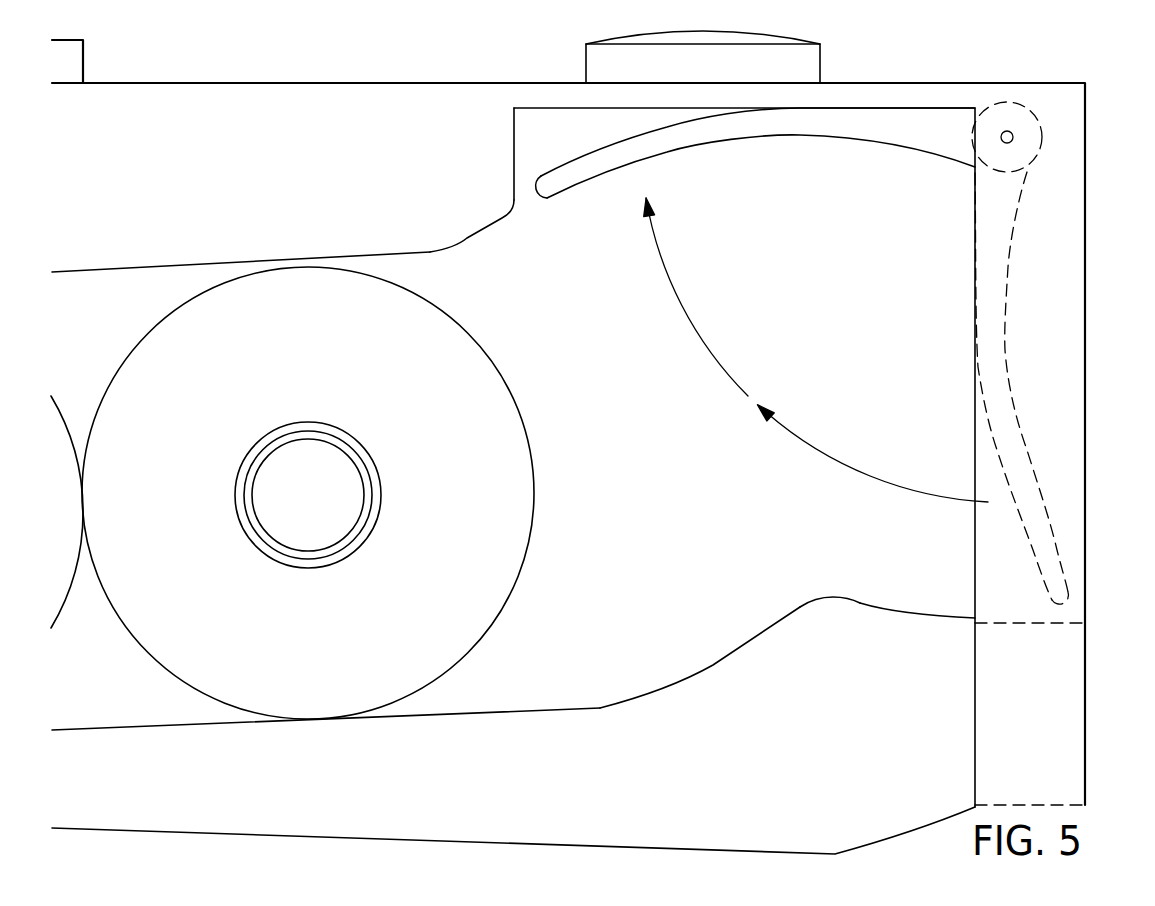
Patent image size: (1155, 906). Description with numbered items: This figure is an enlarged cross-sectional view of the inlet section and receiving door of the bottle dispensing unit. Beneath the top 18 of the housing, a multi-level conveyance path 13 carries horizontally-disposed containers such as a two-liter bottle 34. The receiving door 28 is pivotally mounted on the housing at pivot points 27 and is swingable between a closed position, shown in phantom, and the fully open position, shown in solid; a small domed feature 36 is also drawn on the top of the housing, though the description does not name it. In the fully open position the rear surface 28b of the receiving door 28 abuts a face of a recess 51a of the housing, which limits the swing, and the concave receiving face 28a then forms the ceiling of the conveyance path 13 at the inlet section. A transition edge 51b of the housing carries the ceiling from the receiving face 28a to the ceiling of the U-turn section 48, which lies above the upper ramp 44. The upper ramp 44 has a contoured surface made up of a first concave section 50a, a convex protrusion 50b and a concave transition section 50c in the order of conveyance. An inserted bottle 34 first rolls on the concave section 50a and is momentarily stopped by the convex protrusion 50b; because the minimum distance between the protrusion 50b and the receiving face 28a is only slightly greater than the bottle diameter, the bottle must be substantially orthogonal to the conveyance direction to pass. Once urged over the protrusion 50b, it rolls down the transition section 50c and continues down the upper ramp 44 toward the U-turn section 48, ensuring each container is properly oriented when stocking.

The conveyance path 13 is at (98, 348).
The top 18 is at (272, 83).
The pivot points 27 is at (1013, 137).
The receiving door 28 is at (753, 121).
The receiving face 28a is at (752, 138).
The rear surface 28b is at (840, 107).
The bottle 34 is at (327, 617).
The push button 36 is at (822, 50).
The upper ramp 44 is at (500, 712).
The U-turn section 48 is at (110, 272).
The first concave section 50a is at (888, 607).
The convex protrusion 50b is at (823, 597).
The concave transition section 50c is at (713, 662).
The recess 51a is at (538, 108).
The transition edge 51b is at (478, 233).